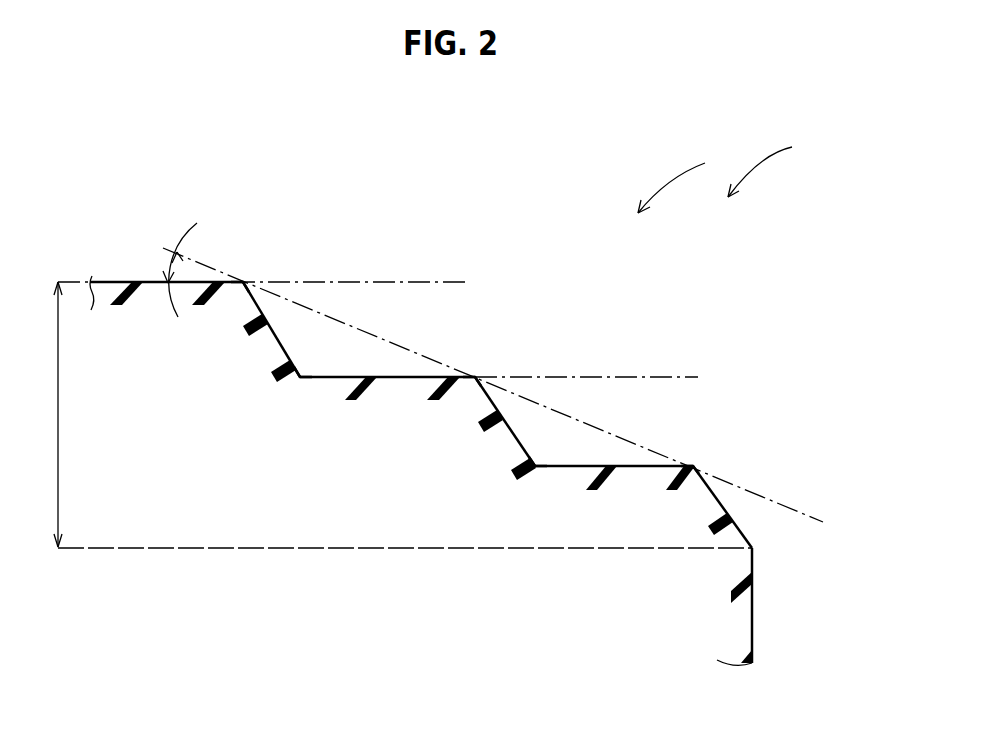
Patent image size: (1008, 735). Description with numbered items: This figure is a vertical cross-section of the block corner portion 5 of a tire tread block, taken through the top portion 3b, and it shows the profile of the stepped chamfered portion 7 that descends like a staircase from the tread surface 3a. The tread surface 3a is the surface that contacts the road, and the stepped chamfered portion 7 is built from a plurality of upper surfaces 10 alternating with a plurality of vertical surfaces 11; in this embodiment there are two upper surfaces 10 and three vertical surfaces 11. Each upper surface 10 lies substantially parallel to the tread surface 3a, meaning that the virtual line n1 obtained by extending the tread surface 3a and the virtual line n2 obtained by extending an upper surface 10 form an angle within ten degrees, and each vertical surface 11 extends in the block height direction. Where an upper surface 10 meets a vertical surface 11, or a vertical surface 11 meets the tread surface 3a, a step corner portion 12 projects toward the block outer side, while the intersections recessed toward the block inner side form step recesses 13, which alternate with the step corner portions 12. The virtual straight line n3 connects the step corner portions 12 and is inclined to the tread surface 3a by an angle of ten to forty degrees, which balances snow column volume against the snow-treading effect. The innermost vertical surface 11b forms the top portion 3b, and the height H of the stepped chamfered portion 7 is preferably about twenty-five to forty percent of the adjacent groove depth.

The tread surface 3a is at (123, 281).
The top portion 3b is at (753, 546).
The block corner portion 5 is at (771, 166).
The stepped chamfered portion 7 is at (681, 180).
The upper surface 10 is at (388, 376).
The vertical surface 11 is at (273, 330).
The innermost vertical surface 11b is at (720, 500).
The step corner portion 12 is at (243, 281).
The step recess 13 is at (302, 377).
The virtual line n1 is at (438, 281).
The virtual line n2 is at (665, 376).
The virtual straight line n3 is at (214, 268).
The height H is at (392, 415).